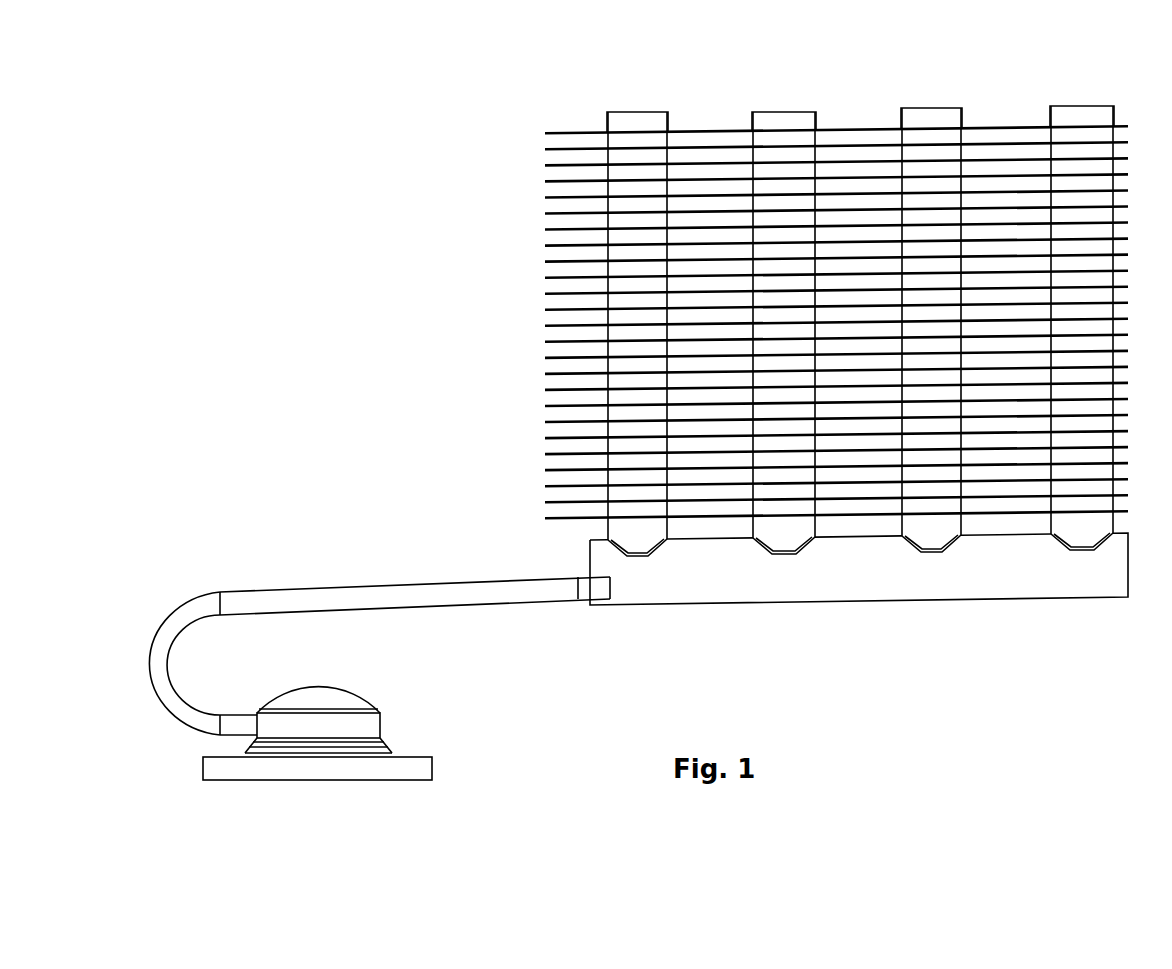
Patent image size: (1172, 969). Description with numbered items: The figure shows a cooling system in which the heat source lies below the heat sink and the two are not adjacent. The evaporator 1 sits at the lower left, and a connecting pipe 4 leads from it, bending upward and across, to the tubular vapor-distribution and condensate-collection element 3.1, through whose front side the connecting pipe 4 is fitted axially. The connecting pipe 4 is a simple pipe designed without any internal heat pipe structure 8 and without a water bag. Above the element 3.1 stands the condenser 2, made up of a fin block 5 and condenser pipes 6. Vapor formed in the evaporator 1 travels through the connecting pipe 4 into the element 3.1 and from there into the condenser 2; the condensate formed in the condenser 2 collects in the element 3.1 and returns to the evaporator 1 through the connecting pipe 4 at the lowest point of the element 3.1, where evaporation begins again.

The evaporator 1 is at (329, 723).
The condenser 2 is at (634, 290).
The tubular vapor-distribution and condensate-collection element 3.1 is at (843, 572).
The connecting pipe 4 is at (447, 590).
The internal heat pipe structure 8 is at (379, 612).
The fin block 5 is at (587, 375).
The condenser pipes 6 is at (640, 122).